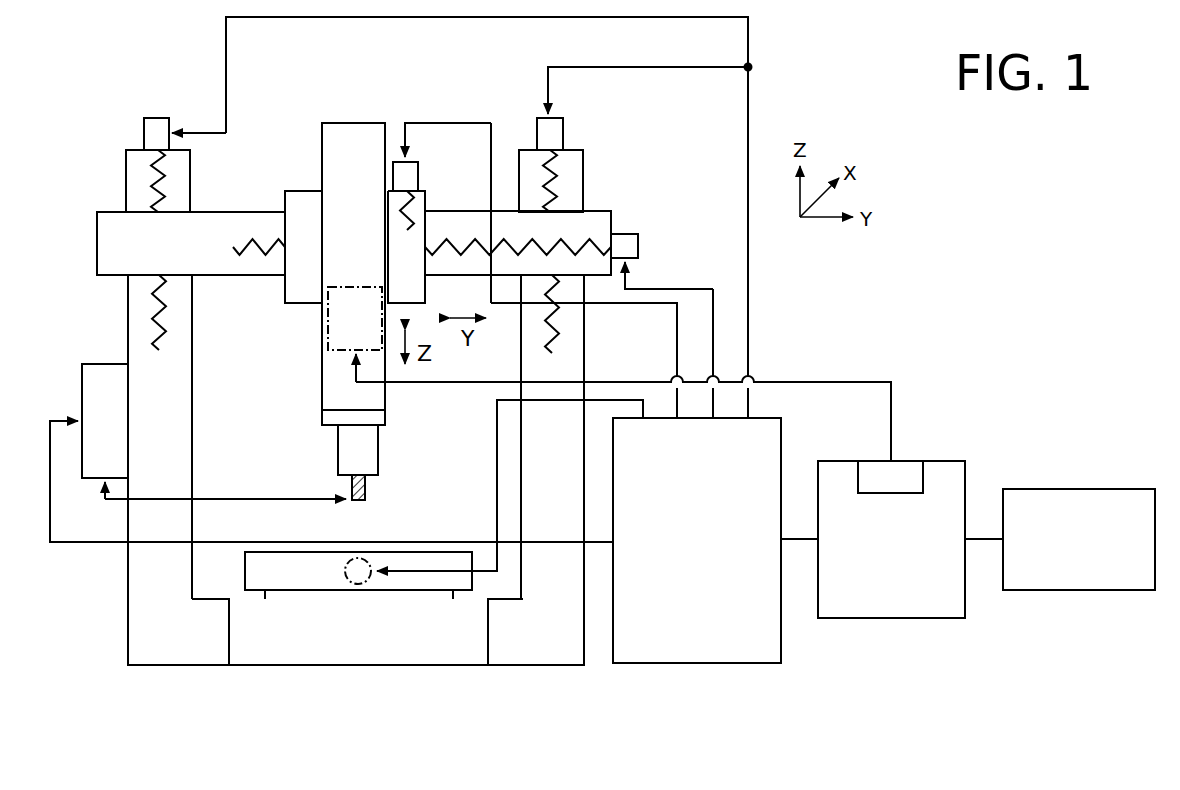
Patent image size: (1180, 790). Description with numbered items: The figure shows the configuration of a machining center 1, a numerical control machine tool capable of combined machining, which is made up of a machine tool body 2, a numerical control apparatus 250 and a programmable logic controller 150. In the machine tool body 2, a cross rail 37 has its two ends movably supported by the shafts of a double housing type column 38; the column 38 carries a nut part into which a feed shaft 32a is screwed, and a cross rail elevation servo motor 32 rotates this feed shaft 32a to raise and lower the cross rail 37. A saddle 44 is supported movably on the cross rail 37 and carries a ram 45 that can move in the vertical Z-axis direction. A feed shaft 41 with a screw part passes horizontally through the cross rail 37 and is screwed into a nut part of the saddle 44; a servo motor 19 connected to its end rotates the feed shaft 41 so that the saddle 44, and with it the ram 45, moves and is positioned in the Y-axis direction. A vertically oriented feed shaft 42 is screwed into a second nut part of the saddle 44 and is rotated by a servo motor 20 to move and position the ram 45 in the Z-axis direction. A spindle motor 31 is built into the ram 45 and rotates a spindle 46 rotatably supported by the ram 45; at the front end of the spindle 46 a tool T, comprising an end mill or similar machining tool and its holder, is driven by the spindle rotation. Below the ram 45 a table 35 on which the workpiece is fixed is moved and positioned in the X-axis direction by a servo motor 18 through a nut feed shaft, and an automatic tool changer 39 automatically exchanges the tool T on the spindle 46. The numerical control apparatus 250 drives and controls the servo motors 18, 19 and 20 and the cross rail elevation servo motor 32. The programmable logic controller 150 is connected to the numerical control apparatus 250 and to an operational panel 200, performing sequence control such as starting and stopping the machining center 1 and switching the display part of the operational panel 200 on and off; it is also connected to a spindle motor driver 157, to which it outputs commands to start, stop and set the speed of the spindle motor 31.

The machining center 1 is at (802, 746).
The machine tool body 2 is at (190, 672).
The servo motor 18 is at (352, 584).
The servo motor 19 is at (638, 246).
The servo motor 20 is at (418, 176).
The spindle motor 31 is at (328, 333).
The cross rail elevation servo motor 32 is at (155, 117).
The feed shaft 32a is at (150, 188).
The table 35 is at (417, 575).
The cross rail 37 is at (97, 236).
The double housing type column 38 is at (127, 307).
The automatic tool changer 39 is at (93, 364).
The feed shaft 41 is at (585, 245).
The feed shaft 42 is at (412, 217).
The saddle 44 is at (300, 191).
The ram 45 is at (322, 397).
The spindle 46 is at (378, 446).
The tool T is at (367, 488).
The programmable logic controller 150 is at (965, 600).
The spindle motor driver 157 is at (923, 480).
The operational panel 200 is at (1120, 489).
The numerical control apparatus 250 is at (735, 663).